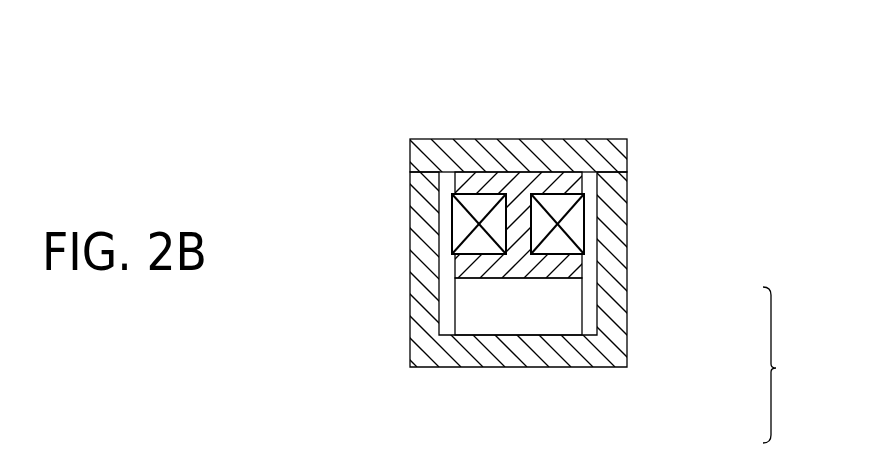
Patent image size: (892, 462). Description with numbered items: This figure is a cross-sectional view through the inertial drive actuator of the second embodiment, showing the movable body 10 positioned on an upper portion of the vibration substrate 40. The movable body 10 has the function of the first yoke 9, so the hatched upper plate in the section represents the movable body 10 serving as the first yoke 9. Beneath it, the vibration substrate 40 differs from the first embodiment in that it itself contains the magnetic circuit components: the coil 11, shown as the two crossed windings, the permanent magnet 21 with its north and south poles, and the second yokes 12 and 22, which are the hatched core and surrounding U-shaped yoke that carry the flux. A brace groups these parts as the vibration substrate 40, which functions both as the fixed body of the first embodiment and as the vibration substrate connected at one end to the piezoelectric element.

The first yoke 9 is at (573, 138).
The movable body 10 is at (502, 138).
The coil 11 is at (585, 233).
The second yoke 12 is at (584, 269).
The permanent magnet 21 is at (582, 322).
The second yoke 22 is at (595, 368).
The vibration substrate 40 is at (786, 365).